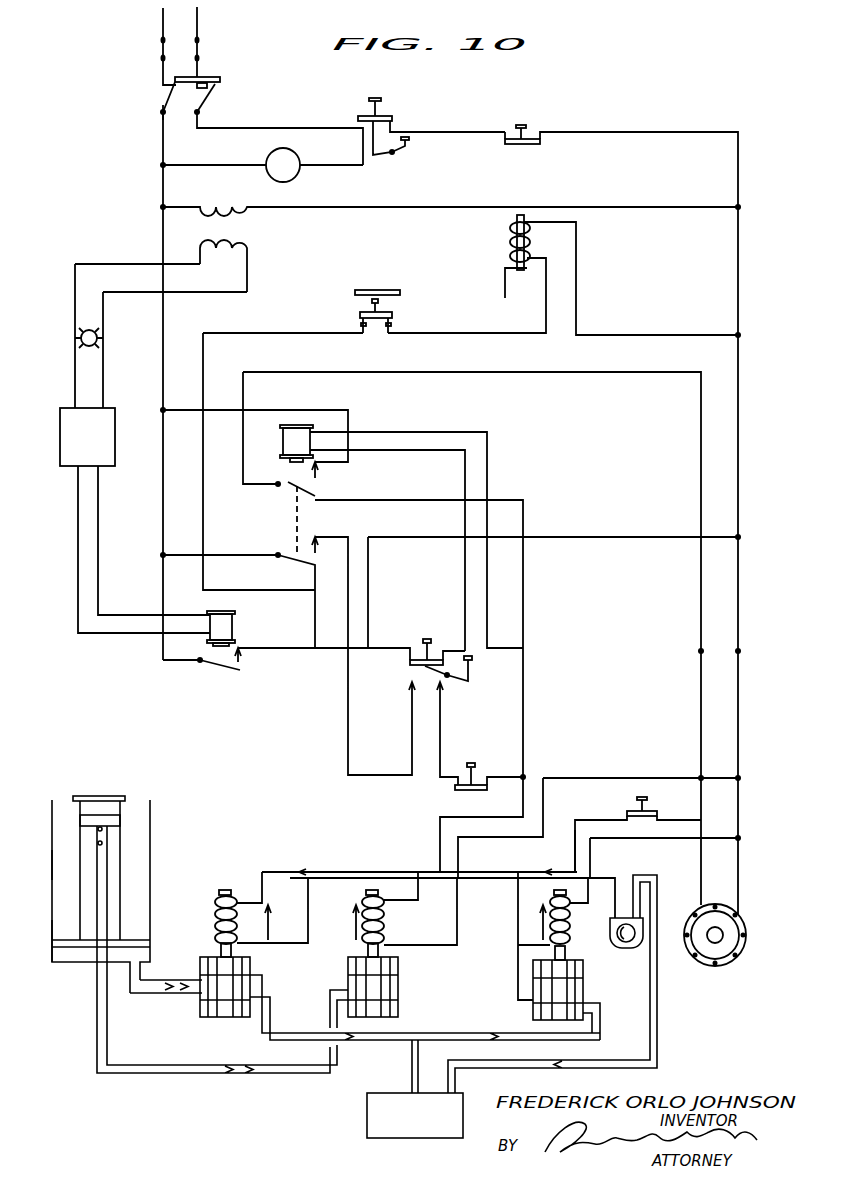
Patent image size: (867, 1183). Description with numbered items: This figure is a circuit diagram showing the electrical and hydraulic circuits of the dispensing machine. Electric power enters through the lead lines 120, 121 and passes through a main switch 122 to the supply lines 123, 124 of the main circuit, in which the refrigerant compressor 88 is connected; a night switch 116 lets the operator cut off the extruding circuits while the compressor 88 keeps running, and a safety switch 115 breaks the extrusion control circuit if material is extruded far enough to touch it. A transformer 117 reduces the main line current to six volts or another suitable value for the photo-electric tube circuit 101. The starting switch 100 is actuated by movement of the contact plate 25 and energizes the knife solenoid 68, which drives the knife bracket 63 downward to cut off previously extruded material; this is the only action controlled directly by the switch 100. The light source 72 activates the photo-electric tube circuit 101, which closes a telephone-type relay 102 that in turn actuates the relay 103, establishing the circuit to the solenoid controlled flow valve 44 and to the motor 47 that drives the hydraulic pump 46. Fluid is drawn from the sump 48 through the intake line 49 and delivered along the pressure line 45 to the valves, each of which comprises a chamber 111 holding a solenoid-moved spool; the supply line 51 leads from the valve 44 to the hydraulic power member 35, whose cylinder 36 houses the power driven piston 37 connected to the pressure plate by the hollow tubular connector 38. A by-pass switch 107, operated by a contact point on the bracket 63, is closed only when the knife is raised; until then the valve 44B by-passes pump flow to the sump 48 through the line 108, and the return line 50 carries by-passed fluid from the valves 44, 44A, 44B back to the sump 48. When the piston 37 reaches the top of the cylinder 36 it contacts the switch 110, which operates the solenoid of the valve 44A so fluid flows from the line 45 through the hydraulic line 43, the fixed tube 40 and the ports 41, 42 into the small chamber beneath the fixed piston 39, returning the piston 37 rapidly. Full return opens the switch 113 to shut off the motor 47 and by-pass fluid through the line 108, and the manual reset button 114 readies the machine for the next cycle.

The lead line 120 is at (163, 20).
The lead line 121 is at (198, 42).
The main switch 122 is at (171, 100).
The supply line 123 is at (200, 111).
The supply line 124 is at (162, 124).
The refrigerant compressor 88 is at (283, 165).
The night switch 116 is at (395, 125).
The safety switch 115 is at (535, 132).
The transformer 117 is at (450, 239).
The contact plate 25 is at (352, 290).
The starting switch 100 is at (382, 318).
The knife solenoid 68 is at (501, 218).
The knife bracket 63 is at (507, 276).
The light source 72 is at (89, 328).
The photo-electric tube circuit 101 is at (110, 451).
The relay 103 is at (283, 451).
The telephone-type relay 102 is at (230, 633).
The switch 110 is at (413, 617).
The manual reset button 114 is at (467, 675).
The switch 113 is at (476, 776).
The by-pass switch 107 is at (628, 819).
The pressure line 45 is at (579, 874).
The hydraulic pump 46 is at (608, 948).
The electric motor 47 is at (745, 948).
The solenoid controlled hydraulic flow valve 44B is at (578, 968).
The by-pass line 108 is at (598, 1019).
The return line 50 is at (488, 1041).
The intake line 49 is at (601, 1069).
The hydraulic sump 48 is at (415, 1115).
The hydraulic line 43 is at (159, 1071).
The supply line 51 is at (151, 998).
The solenoid controlled hydraulic flow valve 44 is at (197, 959).
The solenoid controlled hydraulic flow valve 44A is at (342, 978).
The valve chamber 111 is at (210, 957).
The fixed piston 39 is at (120, 807).
The hollow tubular connector 38 is at (81, 835).
The hydraulic fluid supply port 41 is at (102, 830).
The hydraulic fluid supply port 42 is at (102, 844).
The fixed tube 40 is at (108, 886).
The cylinder 36 is at (56, 858).
The hydraulic power member 35 is at (49, 881).
The power driven piston 37 is at (56, 917).